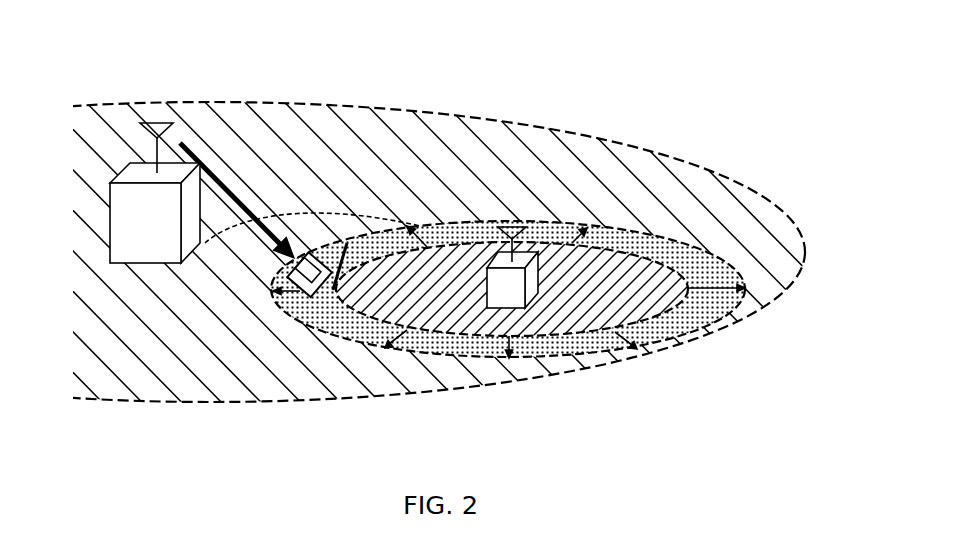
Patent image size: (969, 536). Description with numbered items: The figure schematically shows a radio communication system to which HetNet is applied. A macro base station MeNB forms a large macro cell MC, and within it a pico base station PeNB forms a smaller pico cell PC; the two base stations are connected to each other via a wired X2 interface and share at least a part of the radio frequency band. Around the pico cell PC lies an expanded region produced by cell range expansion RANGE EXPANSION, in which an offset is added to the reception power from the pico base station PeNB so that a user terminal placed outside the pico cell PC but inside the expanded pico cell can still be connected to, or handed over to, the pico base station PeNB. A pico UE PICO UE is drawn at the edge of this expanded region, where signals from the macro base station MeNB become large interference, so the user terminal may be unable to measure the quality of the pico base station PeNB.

The macro cell MC is at (583, 132).
The pico cell PC is at (488, 220).
The X2 interface X2 is at (406, 222).
The macro base station MeNB is at (155, 209).
The pico base station PeNB is at (509, 279).
The pico UE PICO UE is at (308, 284).
The cell range expansion RANGE EXPANSION is at (712, 290).